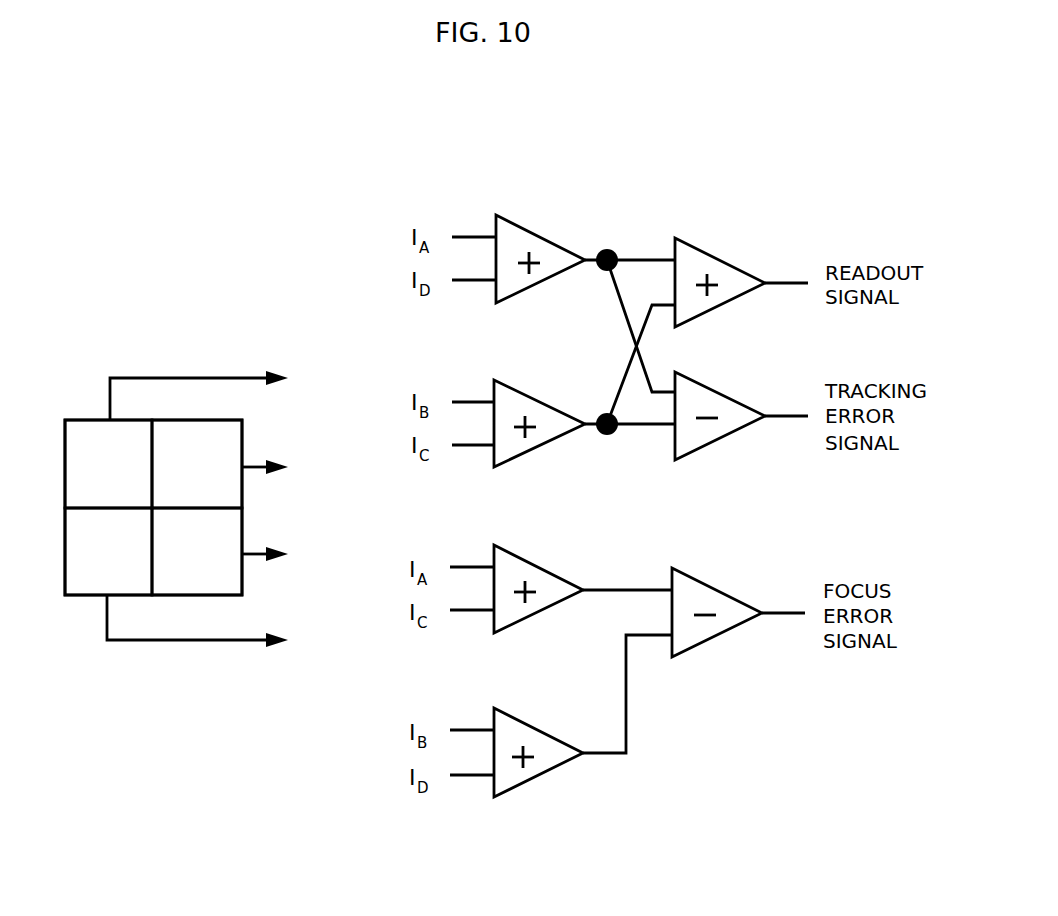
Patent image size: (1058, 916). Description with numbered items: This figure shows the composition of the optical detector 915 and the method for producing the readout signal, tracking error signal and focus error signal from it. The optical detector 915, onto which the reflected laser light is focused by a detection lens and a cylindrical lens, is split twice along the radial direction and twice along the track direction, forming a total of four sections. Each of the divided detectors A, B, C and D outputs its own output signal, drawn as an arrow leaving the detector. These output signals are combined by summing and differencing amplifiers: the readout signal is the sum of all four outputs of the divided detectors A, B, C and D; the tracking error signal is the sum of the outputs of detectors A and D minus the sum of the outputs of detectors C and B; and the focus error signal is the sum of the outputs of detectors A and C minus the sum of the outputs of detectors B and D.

The optical detector 915 is at (192, 459).
The divided detector A is at (197, 464).
The divided detector B is at (108, 464).
The divided detector C is at (108, 551).
The divided detector D is at (197, 551).